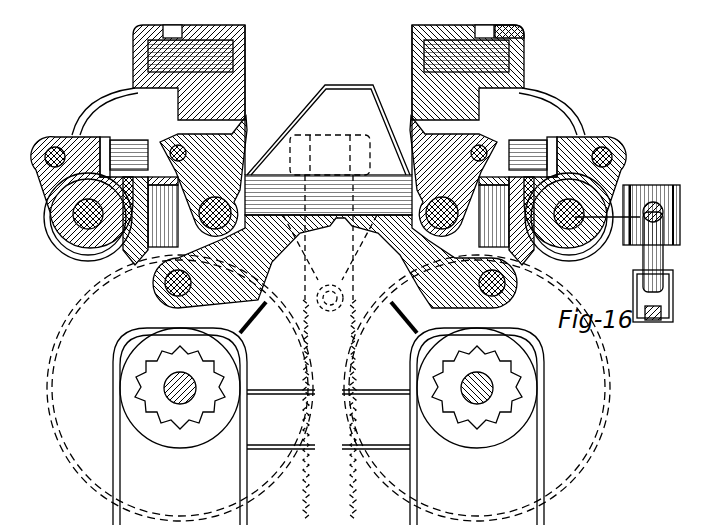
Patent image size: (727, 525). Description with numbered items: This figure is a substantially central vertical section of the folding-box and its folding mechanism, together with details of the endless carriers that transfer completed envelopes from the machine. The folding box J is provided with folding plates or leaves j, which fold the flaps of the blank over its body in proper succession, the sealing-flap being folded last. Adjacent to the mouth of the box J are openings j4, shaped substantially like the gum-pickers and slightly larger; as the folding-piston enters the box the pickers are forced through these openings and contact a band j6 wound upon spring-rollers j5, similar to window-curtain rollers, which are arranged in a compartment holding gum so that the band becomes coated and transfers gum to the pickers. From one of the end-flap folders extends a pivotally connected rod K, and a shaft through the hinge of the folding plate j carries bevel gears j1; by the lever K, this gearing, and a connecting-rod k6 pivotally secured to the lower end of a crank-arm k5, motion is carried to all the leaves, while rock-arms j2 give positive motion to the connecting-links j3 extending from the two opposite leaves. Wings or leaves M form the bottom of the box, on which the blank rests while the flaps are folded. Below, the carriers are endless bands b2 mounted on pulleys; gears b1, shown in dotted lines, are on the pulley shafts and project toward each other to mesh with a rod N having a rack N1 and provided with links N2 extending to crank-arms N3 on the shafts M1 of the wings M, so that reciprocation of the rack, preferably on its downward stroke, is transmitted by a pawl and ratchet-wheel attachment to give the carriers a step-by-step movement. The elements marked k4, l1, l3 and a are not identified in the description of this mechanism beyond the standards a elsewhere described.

The folding box J is at (533, 38).
The folding plate j is at (243, 131).
The bevel gear j1 is at (112, 260).
The rock arm j2 is at (38, 170).
The connecting link j3 is at (325, 157).
The opening j4 is at (174, 24).
The spring roller j5 is at (246, 47).
The band j6 is at (505, 26).
The rod K is at (328, 175).
The eccentric ring k4 is at (68, 220).
The crank arm k5 is at (627, 203).
The connecting rod k6 is at (665, 262).
The wing M is at (335, 261).
The shaft M1 is at (166, 295).
The rod N is at (329, 410).
The rack N1 is at (328, 419).
The link N2 is at (331, 298).
The crank arm N3 is at (398, 172).
The left upright l1 is at (118, 474).
The link bar l3 is at (328, 345).
The gear b1 is at (333, 388).
The endless band b2 is at (546, 442).
The standard a is at (328, 388).